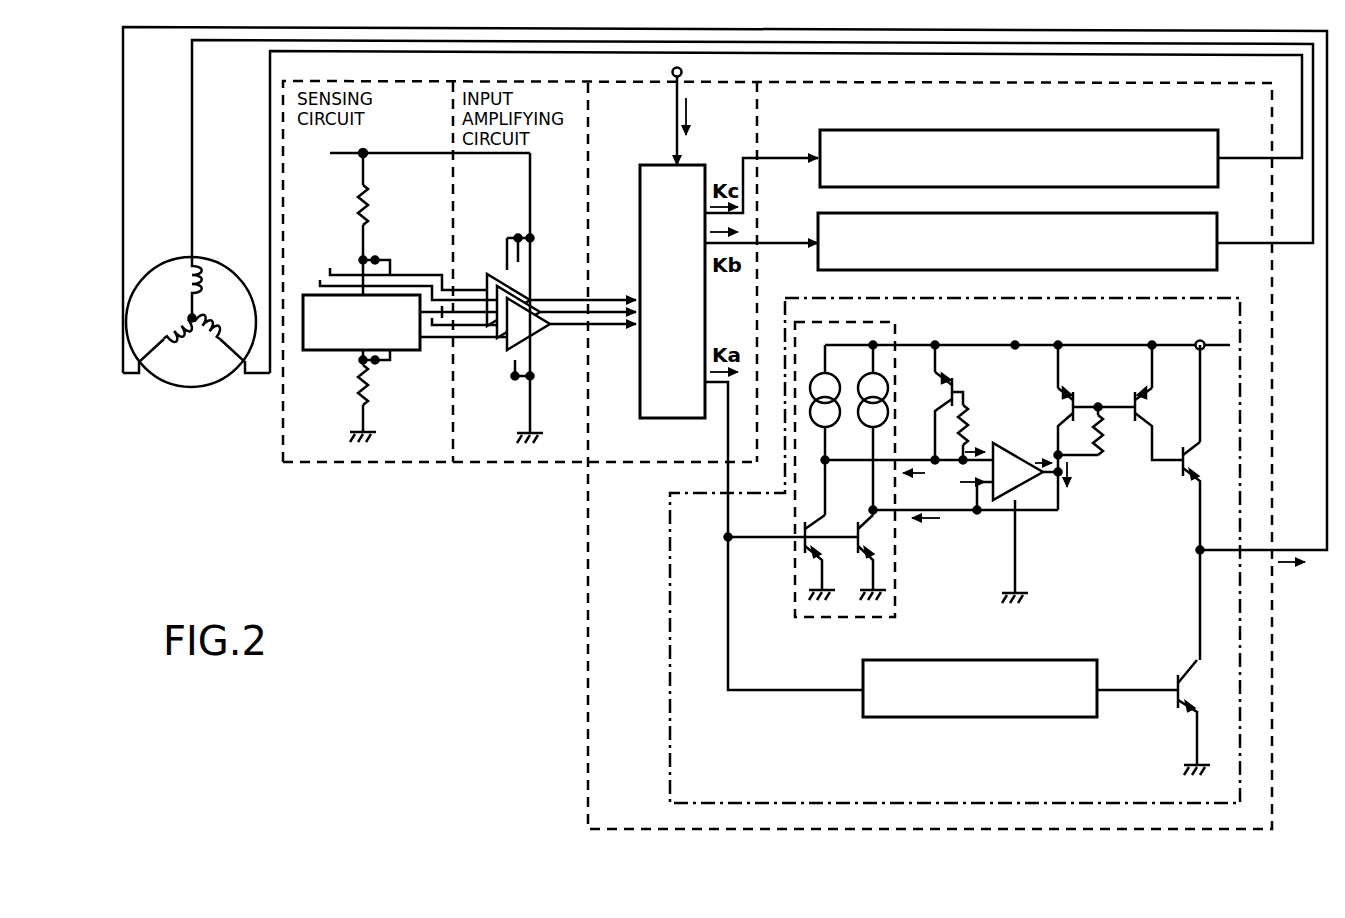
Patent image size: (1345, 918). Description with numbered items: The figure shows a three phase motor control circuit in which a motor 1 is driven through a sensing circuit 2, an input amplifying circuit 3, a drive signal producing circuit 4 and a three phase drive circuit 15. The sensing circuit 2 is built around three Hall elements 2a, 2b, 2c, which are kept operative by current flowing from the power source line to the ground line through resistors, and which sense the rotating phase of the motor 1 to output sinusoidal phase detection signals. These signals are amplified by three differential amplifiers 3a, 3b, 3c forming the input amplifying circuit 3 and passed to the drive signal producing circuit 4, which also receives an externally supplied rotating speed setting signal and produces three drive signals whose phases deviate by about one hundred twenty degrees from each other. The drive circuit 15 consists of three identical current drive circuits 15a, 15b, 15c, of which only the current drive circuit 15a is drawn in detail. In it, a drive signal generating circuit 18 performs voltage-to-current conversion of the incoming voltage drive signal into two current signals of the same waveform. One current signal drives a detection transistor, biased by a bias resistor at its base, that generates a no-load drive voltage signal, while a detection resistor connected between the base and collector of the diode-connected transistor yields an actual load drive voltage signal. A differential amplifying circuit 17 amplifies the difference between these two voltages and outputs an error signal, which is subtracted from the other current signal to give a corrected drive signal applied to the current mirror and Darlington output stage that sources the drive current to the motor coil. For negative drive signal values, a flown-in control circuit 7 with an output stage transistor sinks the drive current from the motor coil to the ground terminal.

The motor 1 is at (173, 386).
The sensing circuit 2 is at (408, 329).
The Hall element 2a is at (318, 355).
The Hall element 2b is at (328, 200).
The Hall element 2c is at (338, 232).
The input amplifying circuit 3 is at (545, 331).
The differential amplifier 3a is at (503, 350).
The differential amplifier 3b is at (490, 285).
The differential amplifier 3c is at (500, 270).
The drive signal producing circuit 4 is at (652, 418).
The flown-in control circuit 7 is at (958, 717).
The drive circuit 15 is at (598, 543).
The current drive circuit 15a is at (672, 746).
The current drive circuit 15b is at (840, 213).
The current drive circuit 15c is at (840, 130).
The differential amplifying circuit 17 is at (1030, 500).
The drive signal generating circuit 18 is at (795, 582).